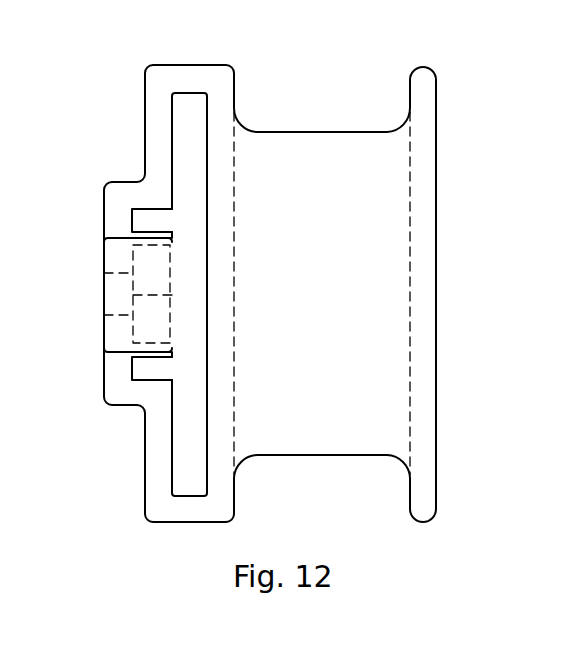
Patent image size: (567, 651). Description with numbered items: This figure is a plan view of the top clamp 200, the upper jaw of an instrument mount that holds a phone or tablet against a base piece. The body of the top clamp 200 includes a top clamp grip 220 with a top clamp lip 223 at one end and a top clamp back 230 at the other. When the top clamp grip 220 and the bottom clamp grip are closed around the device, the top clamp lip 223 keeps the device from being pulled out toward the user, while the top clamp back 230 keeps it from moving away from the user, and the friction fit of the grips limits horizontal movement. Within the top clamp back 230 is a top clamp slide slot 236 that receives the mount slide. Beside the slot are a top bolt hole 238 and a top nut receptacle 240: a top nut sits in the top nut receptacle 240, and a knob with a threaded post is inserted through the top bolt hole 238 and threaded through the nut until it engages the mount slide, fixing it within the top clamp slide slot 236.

The top clamp 200 is at (340, 360).
The top clamp grip 220 is at (375, 242).
The top clamp lip 223 is at (426, 325).
The top clamp back 230 is at (235, 90).
The top clamp slide slot 236 is at (177, 127).
The top bolt hole 238 is at (117, 288).
The top nut receptacle 240 is at (137, 317).